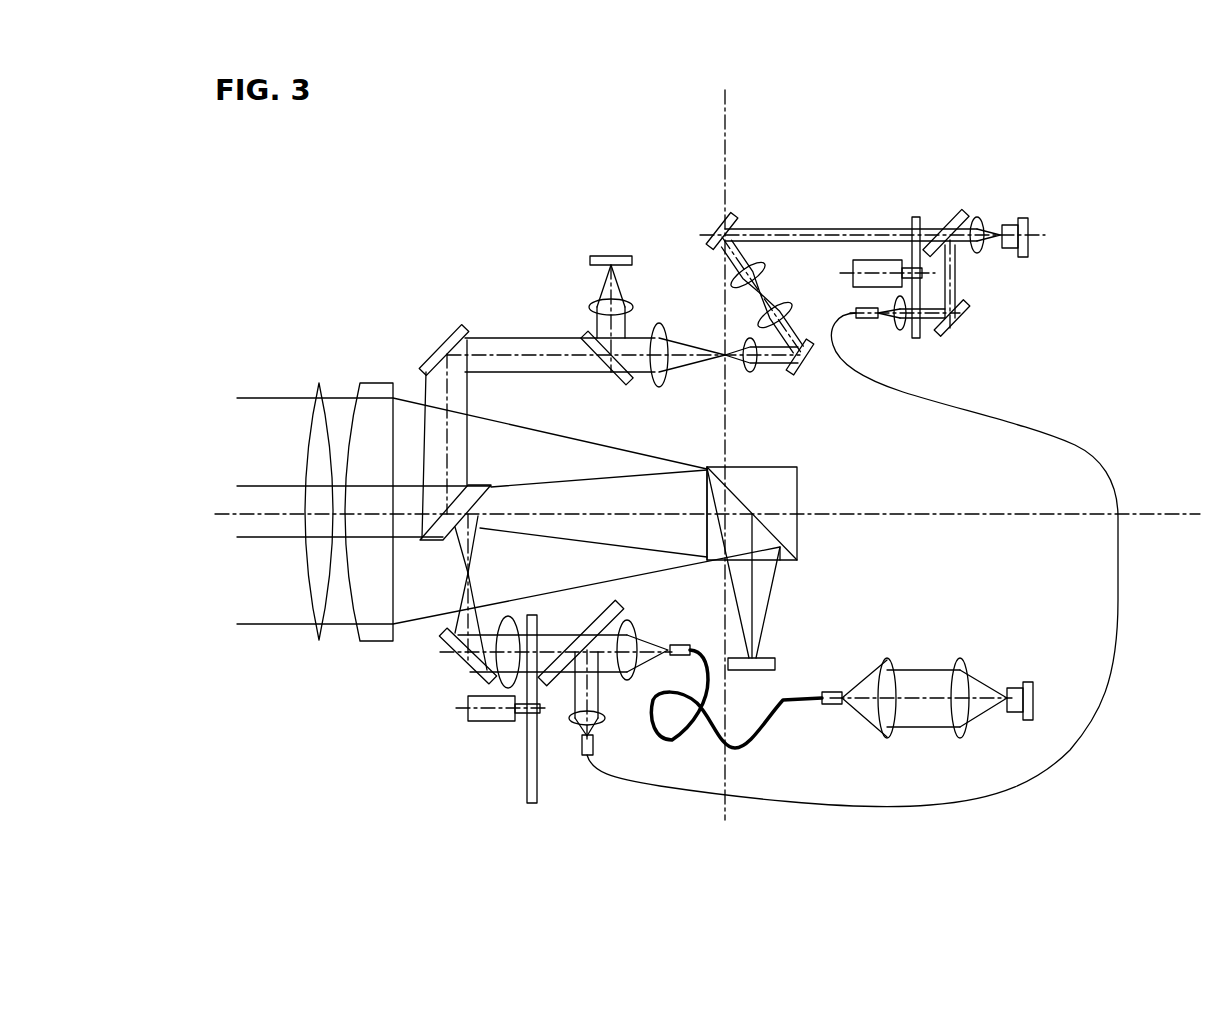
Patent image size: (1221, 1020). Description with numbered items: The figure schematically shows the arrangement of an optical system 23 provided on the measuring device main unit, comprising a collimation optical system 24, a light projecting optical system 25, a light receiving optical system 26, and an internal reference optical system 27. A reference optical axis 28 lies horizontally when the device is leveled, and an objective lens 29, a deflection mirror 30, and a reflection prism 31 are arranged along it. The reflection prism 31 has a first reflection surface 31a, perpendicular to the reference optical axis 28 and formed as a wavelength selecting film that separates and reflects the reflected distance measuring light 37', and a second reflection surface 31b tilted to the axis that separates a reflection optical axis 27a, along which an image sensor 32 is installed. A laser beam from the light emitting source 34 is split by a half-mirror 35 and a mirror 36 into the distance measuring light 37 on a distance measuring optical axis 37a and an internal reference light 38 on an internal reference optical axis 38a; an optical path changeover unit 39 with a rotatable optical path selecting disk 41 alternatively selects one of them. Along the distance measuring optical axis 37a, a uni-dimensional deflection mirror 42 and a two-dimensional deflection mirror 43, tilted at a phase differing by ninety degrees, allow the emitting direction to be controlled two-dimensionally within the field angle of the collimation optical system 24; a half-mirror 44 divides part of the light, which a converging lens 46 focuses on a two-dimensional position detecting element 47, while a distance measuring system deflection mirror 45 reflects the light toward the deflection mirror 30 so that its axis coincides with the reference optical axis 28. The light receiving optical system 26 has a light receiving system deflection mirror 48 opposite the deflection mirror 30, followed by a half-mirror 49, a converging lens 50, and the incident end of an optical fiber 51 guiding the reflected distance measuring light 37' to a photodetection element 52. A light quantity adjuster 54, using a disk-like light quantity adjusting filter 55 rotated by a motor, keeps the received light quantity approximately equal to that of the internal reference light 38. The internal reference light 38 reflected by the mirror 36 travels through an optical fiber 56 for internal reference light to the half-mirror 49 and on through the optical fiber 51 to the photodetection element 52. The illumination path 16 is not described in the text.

The illumination light 16 is at (768, 262).
The optical system 23 is at (548, 180).
The collimation optical system 24 is at (383, 347).
The light projecting optical system 25 is at (657, 302).
The light receiving optical system 26 is at (450, 668).
The internal reference optical system 27 is at (1076, 440).
The reflection optical axis 27a is at (752, 586).
The reference optical axis 28 is at (923, 514).
The objective lens 29 is at (372, 373).
The deflection mirror 30 is at (478, 488).
The reflection prism 31 is at (796, 496).
The first reflection surface 31a is at (705, 496).
The second reflection surface 31b is at (775, 527).
The image sensor 32 is at (778, 666).
The light emitting source 34 is at (1005, 225).
The half-mirror 35 is at (955, 213).
The mirror 36 is at (968, 320).
The distance measuring light 37 is at (872, 207).
The distance measuring optical axis 37a is at (510, 350).
The reflected distance measuring light 37' is at (485, 473).
The internal reference light 38 is at (957, 283).
The internal reference optical axis 38a is at (957, 298).
The optical path changeover unit 39 is at (851, 287).
The optical path selecting disk 41 is at (916, 216).
The uni-dimensional deflection mirror 42 is at (728, 215).
The two-dimensional deflection mirror 43 is at (805, 368).
The half-mirror 44 is at (622, 386).
The distance measuring system deflection mirror 45 is at (455, 335).
The converging lens 46 is at (596, 305).
The two-dimensional position detecting element 47 is at (620, 257).
The light receiving system deflection mirror 48 is at (470, 672).
The half-mirror 49 is at (616, 612).
The converging lens 50 is at (637, 667).
The optical fiber 51 is at (762, 725).
The photodetection element 52 is at (1017, 688).
The light quantity adjuster 54 is at (492, 722).
The light quantity adjusting filter 55 is at (540, 778).
The optical fiber for internal reference light 56 is at (1120, 620).